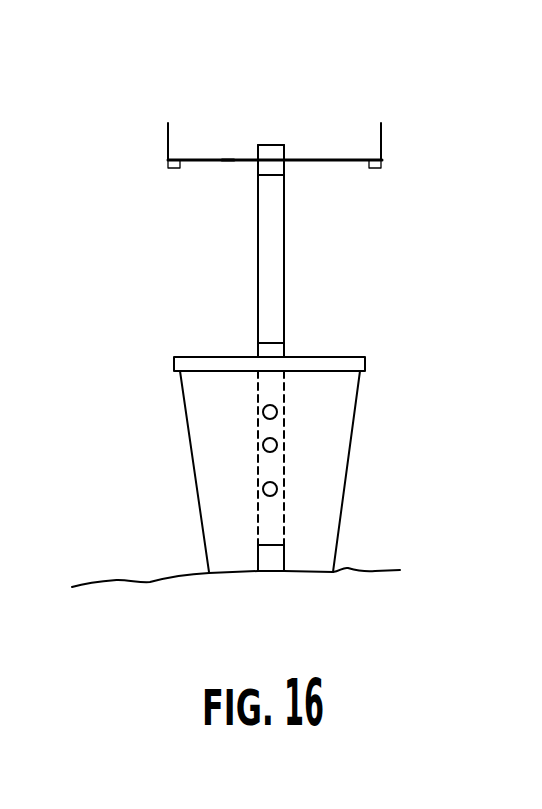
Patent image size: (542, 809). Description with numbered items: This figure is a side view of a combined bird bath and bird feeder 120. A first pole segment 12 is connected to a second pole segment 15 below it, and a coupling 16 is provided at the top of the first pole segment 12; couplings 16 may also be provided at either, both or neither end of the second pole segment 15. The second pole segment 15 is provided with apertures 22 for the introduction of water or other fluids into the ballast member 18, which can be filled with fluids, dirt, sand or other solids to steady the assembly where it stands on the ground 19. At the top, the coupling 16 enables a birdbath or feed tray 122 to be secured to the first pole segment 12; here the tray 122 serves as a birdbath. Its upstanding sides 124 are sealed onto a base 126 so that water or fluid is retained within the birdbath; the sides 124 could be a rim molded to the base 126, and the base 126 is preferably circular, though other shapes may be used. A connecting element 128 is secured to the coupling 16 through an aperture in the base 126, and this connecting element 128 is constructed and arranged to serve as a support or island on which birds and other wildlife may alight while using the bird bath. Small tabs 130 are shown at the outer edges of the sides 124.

The first pole segment 12 is at (285, 262).
The second pole segment 15 is at (285, 430).
The coupling 16 is at (280, 172).
The ballast member 18 is at (343, 503).
The ground 19 is at (118, 580).
The apertures 22 is at (263, 445).
The combined bird bath and bird feeder 120 is at (112, 245).
The birdbath or feed tray 122 is at (202, 158).
The upstanding sides 124 is at (167, 150).
The base 126 is at (228, 163).
The connecting element 128 is at (283, 143).
The tabs 130 is at (172, 170).